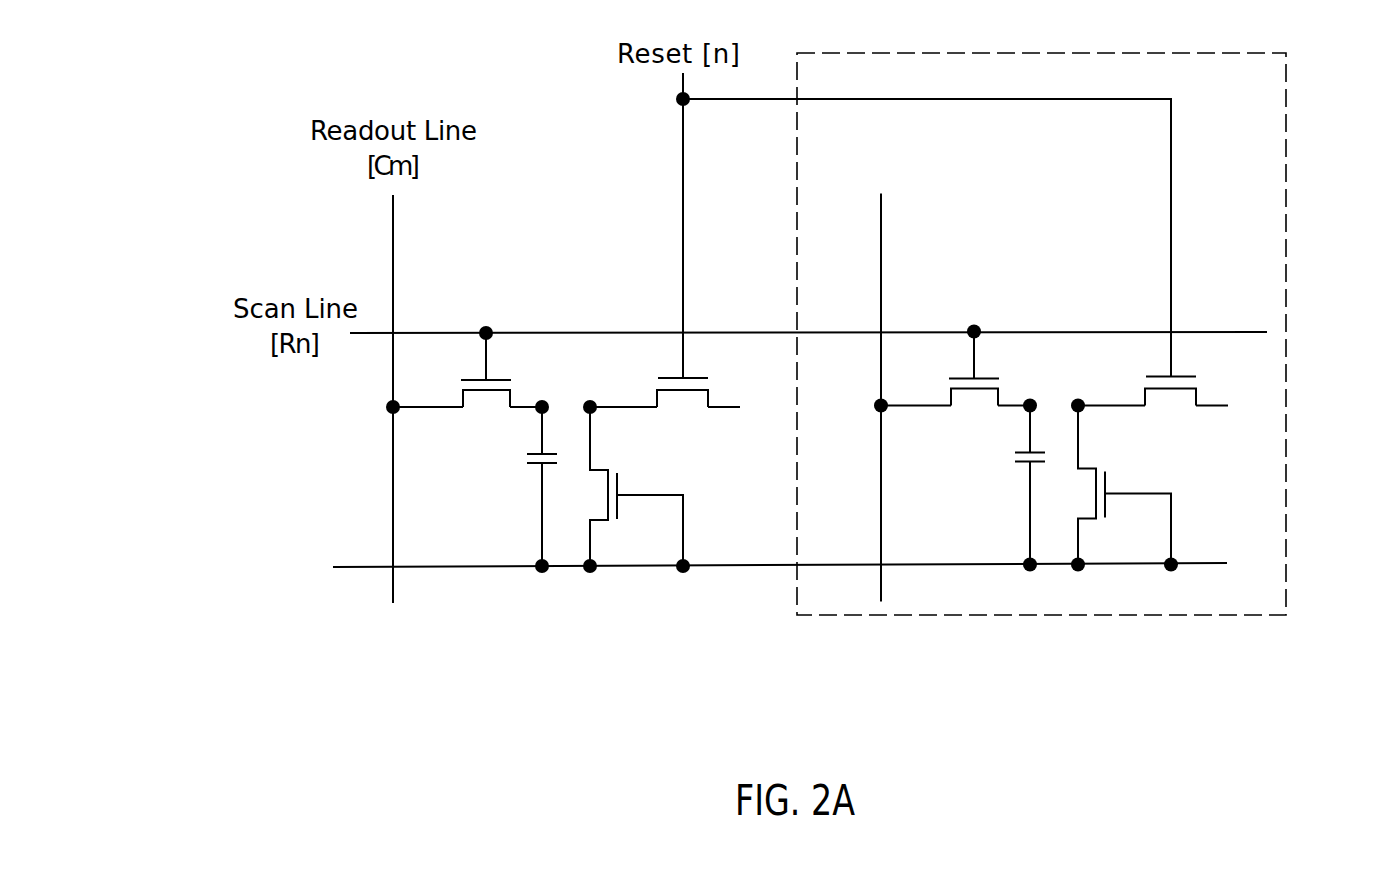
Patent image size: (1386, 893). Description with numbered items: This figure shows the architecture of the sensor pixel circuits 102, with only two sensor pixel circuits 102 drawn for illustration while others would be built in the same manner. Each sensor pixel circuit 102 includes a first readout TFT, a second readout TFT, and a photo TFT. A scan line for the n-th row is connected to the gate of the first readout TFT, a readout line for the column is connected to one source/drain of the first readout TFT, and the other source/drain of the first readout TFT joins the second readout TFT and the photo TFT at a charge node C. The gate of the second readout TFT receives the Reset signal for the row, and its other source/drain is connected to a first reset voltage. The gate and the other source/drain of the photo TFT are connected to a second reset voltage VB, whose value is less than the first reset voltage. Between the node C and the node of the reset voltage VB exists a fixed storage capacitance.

The sensor pixel circuit 102 is at (1041, 334).
The node C is at (1088, 419).
The reset voltage VB is at (796, 559).